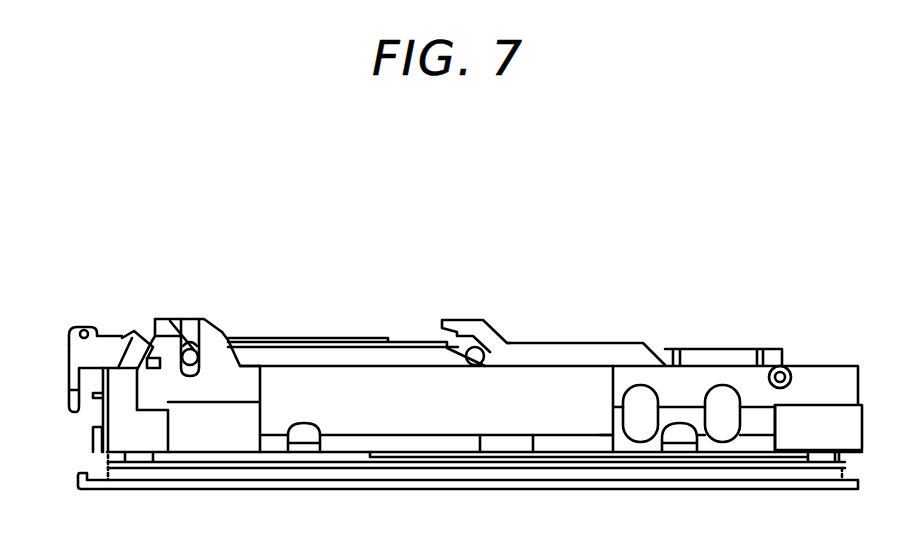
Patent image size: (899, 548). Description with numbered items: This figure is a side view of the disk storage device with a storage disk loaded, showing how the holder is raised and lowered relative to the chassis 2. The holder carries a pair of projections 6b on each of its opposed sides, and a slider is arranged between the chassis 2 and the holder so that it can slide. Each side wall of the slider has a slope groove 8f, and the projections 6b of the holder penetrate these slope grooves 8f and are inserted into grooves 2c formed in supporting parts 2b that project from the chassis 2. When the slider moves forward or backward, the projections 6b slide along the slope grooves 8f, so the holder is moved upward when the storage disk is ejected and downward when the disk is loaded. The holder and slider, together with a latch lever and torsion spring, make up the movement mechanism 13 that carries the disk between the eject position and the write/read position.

The chassis 2 is at (461, 417).
The supporting part 2b is at (153, 341).
The groove 2c is at (186, 330).
The slope groove 8f is at (168, 338).
The projection 6b is at (200, 360).
The movement mechanism 13 is at (353, 330).